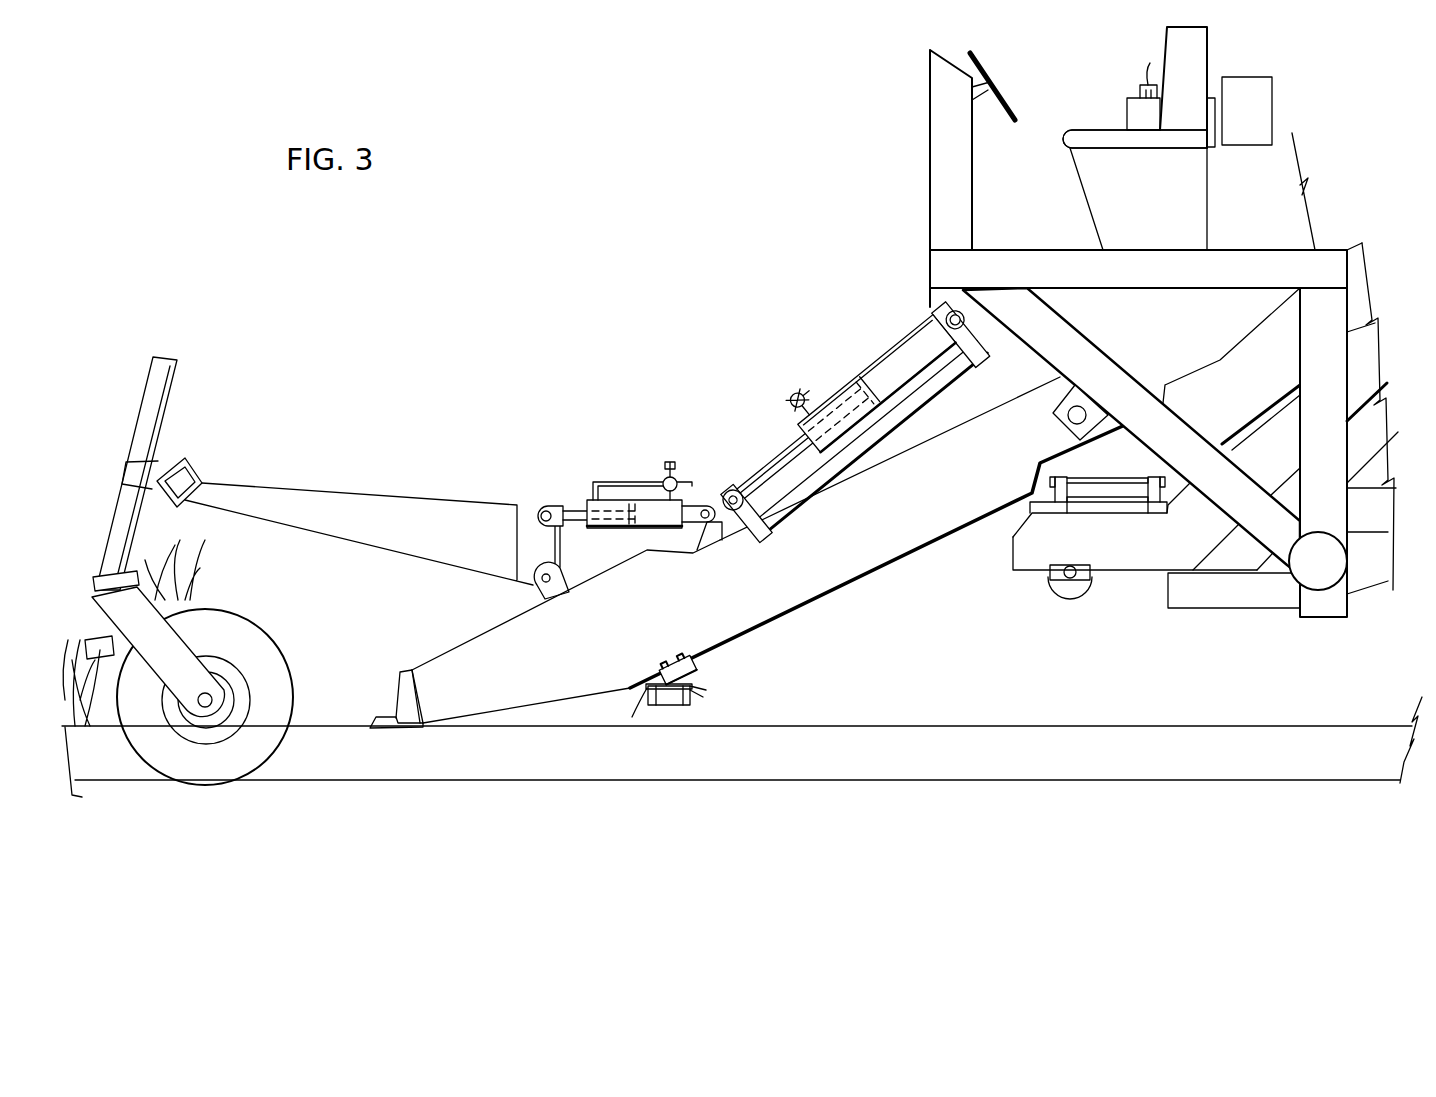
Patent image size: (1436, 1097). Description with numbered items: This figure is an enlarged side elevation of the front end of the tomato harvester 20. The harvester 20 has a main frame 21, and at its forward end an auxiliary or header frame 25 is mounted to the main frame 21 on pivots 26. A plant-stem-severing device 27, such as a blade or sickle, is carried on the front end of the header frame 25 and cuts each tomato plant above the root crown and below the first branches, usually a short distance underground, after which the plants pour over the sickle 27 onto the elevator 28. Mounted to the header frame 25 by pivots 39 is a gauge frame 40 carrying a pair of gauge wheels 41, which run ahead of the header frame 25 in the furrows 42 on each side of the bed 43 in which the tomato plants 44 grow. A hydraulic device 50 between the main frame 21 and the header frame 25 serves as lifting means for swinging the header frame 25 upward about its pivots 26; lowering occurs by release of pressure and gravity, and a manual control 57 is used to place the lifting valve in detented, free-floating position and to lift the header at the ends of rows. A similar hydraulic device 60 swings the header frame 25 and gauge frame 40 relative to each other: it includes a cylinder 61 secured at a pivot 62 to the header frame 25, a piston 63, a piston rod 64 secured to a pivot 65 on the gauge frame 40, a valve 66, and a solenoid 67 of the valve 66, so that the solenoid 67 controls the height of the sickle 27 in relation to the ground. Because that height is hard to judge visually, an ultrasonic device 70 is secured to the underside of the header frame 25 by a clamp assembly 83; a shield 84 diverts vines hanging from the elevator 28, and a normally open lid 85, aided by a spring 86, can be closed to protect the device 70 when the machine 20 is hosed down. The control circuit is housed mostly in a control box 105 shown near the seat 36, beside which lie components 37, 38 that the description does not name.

The tomato harvester 20 is at (701, 401).
The main frame 21 is at (1183, 278).
The header frame 25 is at (845, 584).
The pivots 26 is at (1068, 410).
The plant-stem-severing device 27 is at (370, 734).
The elevator 28 is at (620, 622).
The seat 36 is at (1108, 130).
The control box 37 is at (1138, 100).
The steering wheel 38 is at (1010, 107).
The pivots 39 is at (533, 582).
The gauge frame 40 is at (408, 503).
The gauge wheels 41 is at (255, 633).
The furrows 42 is at (312, 780).
The bed 43 is at (308, 726).
The tomato plants 44 is at (200, 578).
The hydraulic device 50 is at (846, 412).
The manual control 57 is at (1146, 84).
The hydraulic device 60 is at (612, 489).
The cylinder 61 is at (648, 508).
The pivot 62 is at (706, 506).
The piston 63 is at (640, 538).
The piston rod 64 is at (574, 508).
The pivot 65 is at (543, 510).
The valve 66 is at (668, 478).
The solenoid 67 is at (676, 465).
The ultrasonic device 70 is at (692, 687).
The clamp assembly 83 is at (697, 662).
The shield 84 is at (697, 683).
The lid 85 is at (670, 704).
The spring 86 is at (623, 708).
The control box 105 is at (1260, 108).